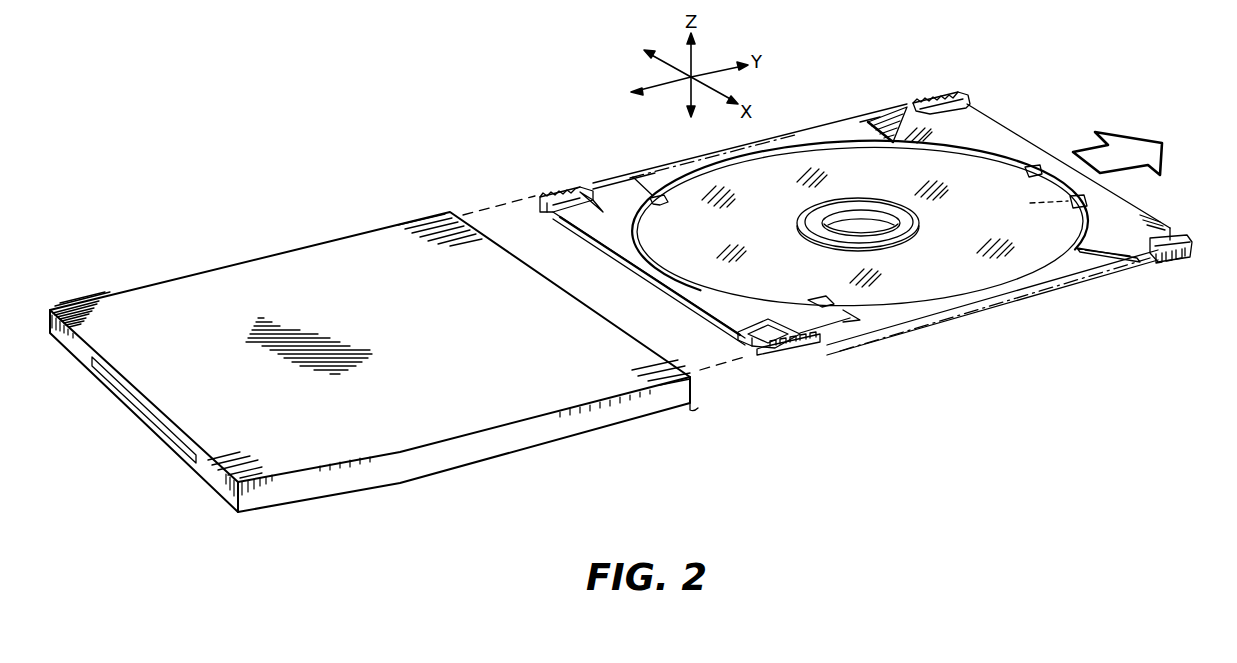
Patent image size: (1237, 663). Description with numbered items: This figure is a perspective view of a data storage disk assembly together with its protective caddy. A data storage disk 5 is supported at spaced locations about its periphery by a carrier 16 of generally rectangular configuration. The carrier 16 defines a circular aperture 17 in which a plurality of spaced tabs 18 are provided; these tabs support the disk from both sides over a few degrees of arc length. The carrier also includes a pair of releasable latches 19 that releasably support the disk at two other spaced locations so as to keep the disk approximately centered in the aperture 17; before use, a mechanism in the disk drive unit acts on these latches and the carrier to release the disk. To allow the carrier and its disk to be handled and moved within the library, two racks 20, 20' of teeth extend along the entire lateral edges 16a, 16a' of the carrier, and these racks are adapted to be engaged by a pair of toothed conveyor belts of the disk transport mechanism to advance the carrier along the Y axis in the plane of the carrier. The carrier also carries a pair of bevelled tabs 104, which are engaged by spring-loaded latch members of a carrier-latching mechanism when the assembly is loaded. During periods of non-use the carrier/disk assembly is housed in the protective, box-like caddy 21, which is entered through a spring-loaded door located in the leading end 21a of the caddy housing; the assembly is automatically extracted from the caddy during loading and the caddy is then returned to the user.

The data storage disk 5 is at (938, 262).
The carrier 16 is at (1033, 306).
The lateral edge 16a is at (995, 312).
The lateral edge 16a' is at (712, 150).
The circular aperture 17 is at (823, 157).
The tabs 18 is at (1034, 178).
The releasable latches 19 is at (660, 206).
The rack of teeth 20 is at (788, 363).
The rack of teeth 20' is at (571, 181).
The caddy 21 is at (471, 381).
The leading end 21a is at (695, 408).
The bevelled tabs 104 is at (555, 213).